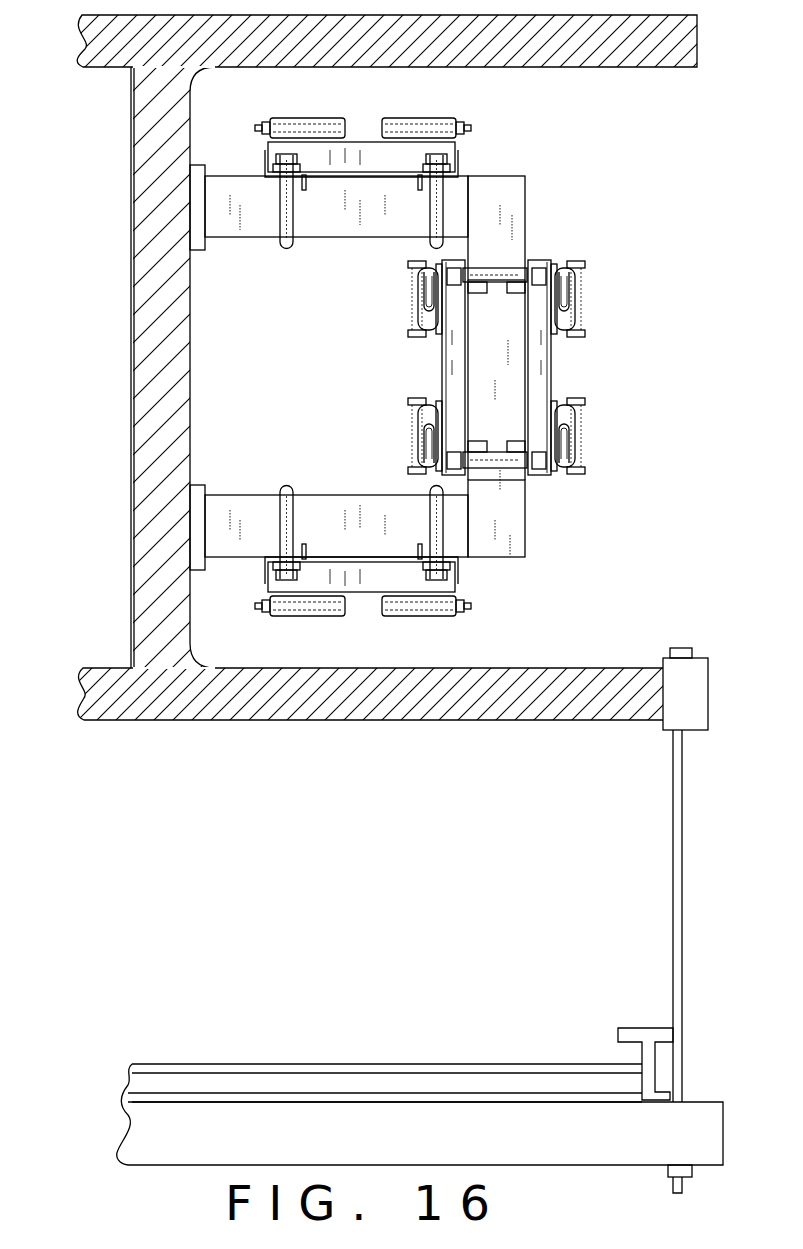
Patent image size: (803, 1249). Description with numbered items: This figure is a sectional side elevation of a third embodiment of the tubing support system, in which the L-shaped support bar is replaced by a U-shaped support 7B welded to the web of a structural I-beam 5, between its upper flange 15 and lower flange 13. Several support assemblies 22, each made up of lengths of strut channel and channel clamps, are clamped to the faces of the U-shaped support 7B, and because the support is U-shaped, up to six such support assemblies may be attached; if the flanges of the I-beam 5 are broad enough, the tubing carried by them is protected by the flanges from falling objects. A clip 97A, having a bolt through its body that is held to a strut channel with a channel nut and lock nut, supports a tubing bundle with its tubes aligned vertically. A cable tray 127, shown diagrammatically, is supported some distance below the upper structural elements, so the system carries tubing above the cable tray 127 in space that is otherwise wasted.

The structural I-beam 5 is at (88, 353).
The upper flange 15 is at (645, 47).
The lower flange 13 is at (628, 690).
The support assembly 22 is at (463, 357).
The clip 97A is at (587, 300).
The U-shaped support 7B is at (365, 538).
The cable tray 127 is at (455, 1060).